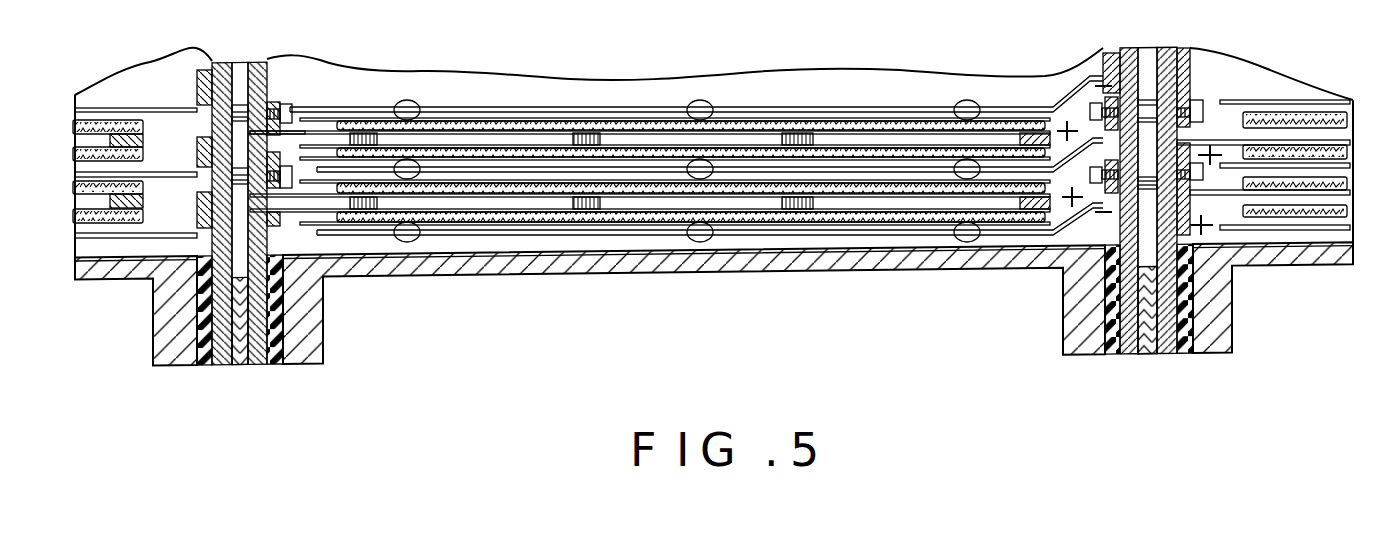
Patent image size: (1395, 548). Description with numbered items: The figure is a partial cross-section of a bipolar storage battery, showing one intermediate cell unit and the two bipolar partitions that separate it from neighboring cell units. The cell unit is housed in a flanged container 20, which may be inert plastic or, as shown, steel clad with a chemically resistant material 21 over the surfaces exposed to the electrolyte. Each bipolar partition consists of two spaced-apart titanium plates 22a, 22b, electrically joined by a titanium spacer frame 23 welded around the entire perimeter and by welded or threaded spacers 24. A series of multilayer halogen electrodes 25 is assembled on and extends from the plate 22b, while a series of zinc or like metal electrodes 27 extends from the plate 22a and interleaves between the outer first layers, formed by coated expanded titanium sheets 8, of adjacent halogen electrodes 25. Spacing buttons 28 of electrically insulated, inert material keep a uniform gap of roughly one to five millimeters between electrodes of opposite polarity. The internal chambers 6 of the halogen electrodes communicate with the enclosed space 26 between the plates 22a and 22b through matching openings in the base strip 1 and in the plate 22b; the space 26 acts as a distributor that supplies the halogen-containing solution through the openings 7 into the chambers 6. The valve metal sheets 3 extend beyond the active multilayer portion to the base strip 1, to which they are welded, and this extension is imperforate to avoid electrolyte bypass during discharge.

The base strip 1 is at (272, 105).
The valve metal sheet 3 is at (298, 133).
The internal chamber 6 is at (493, 200).
The opening 7 is at (262, 142).
The coated expanded titanium sheet 8 is at (753, 155).
The flanged container 20 is at (700, 277).
The chemically resistant material 21 is at (600, 242).
The plate 22a is at (220, 352).
The plate 22b is at (262, 352).
The spacer frame 23 is at (241, 350).
The spacer 24 is at (243, 117).
The halogen electrode 25 is at (112, 118).
The enclosed space 26 is at (237, 82).
The metal electrode 27 is at (873, 107).
The spacing button 28 is at (418, 160).